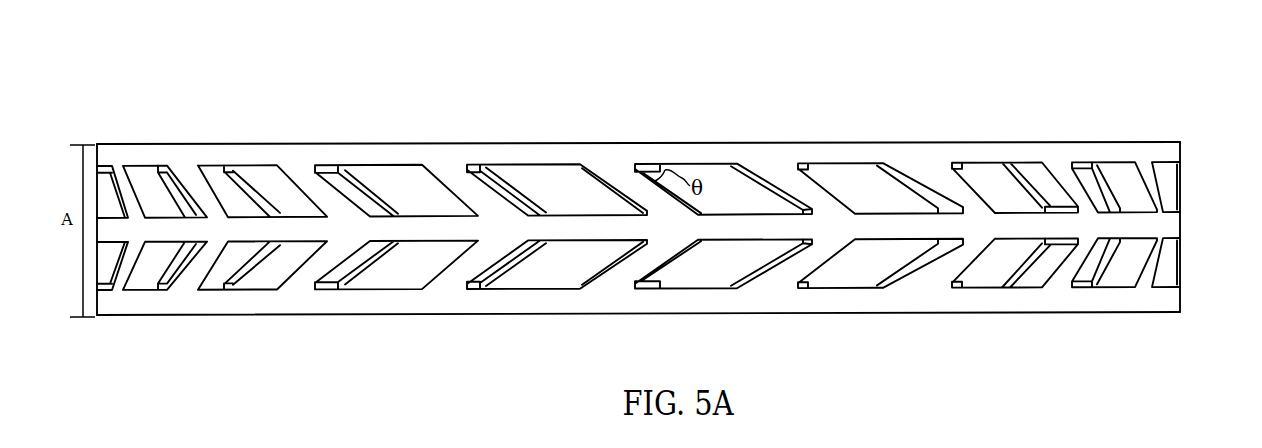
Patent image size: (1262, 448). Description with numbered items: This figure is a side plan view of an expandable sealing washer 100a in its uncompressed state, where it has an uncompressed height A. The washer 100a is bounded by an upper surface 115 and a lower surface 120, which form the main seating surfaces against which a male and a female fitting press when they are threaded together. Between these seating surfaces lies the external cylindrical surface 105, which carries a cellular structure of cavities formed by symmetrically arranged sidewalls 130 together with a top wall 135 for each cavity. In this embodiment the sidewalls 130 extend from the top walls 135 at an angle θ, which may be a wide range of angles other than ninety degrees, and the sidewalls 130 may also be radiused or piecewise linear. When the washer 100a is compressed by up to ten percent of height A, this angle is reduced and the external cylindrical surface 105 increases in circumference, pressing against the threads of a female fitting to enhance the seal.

The washer 100a is at (670, 214).
The external cylindrical surface 105 is at (1182, 222).
The upper surface 115 is at (575, 141).
The lower surface 120 is at (563, 315).
The sidewalls 130 is at (618, 180).
The top wall 135 is at (663, 158).